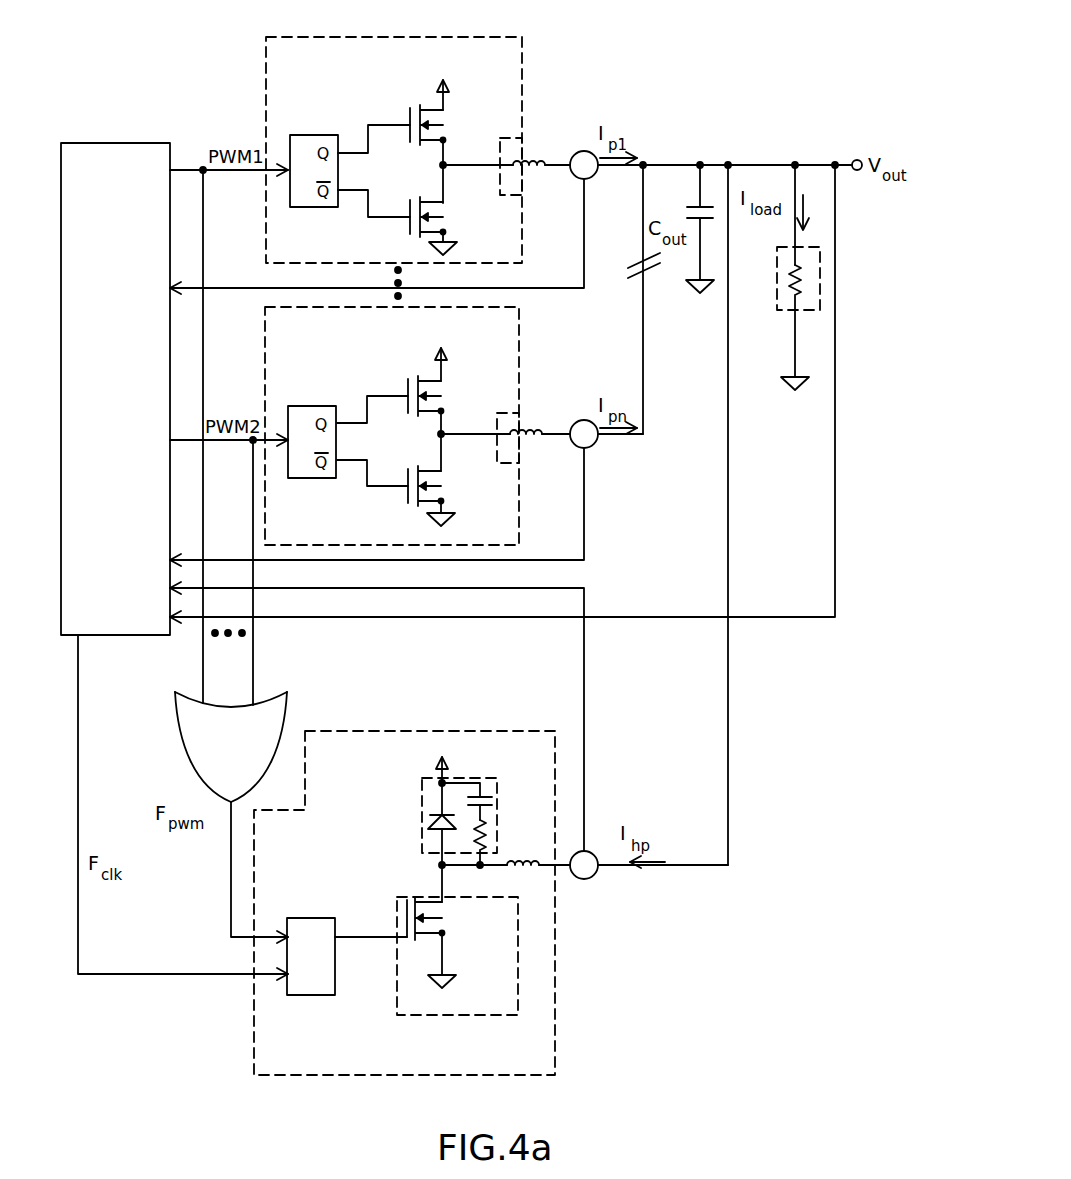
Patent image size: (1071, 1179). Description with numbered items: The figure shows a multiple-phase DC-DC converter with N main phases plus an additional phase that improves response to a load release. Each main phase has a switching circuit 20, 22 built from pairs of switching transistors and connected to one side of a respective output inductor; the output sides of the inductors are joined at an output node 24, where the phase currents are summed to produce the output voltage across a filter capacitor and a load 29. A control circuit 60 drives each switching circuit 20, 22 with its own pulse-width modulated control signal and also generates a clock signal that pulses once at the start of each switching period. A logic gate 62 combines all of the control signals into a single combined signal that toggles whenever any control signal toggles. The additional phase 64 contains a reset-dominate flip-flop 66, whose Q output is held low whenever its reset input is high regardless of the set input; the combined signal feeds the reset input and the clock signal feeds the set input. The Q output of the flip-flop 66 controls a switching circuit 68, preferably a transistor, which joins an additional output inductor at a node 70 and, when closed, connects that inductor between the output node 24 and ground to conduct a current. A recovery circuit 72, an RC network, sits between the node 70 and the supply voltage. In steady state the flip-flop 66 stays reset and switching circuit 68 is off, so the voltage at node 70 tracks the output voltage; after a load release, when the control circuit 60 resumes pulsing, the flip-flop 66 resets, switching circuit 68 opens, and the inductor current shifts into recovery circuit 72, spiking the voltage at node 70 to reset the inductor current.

The control circuit 60 is at (123, 143).
The switching circuit 20 is at (522, 60).
The switching circuit 22 is at (519, 377).
The output node 24 is at (643, 165).
The load 29 is at (780, 310).
The logic gate 62 is at (177, 727).
The additional phase 64 is at (413, 1075).
The reset-dominate flip-flop 66 is at (313, 995).
The switching circuit 68 is at (462, 1015).
The node 70 is at (447, 868).
The recovery circuit 72 is at (497, 803).